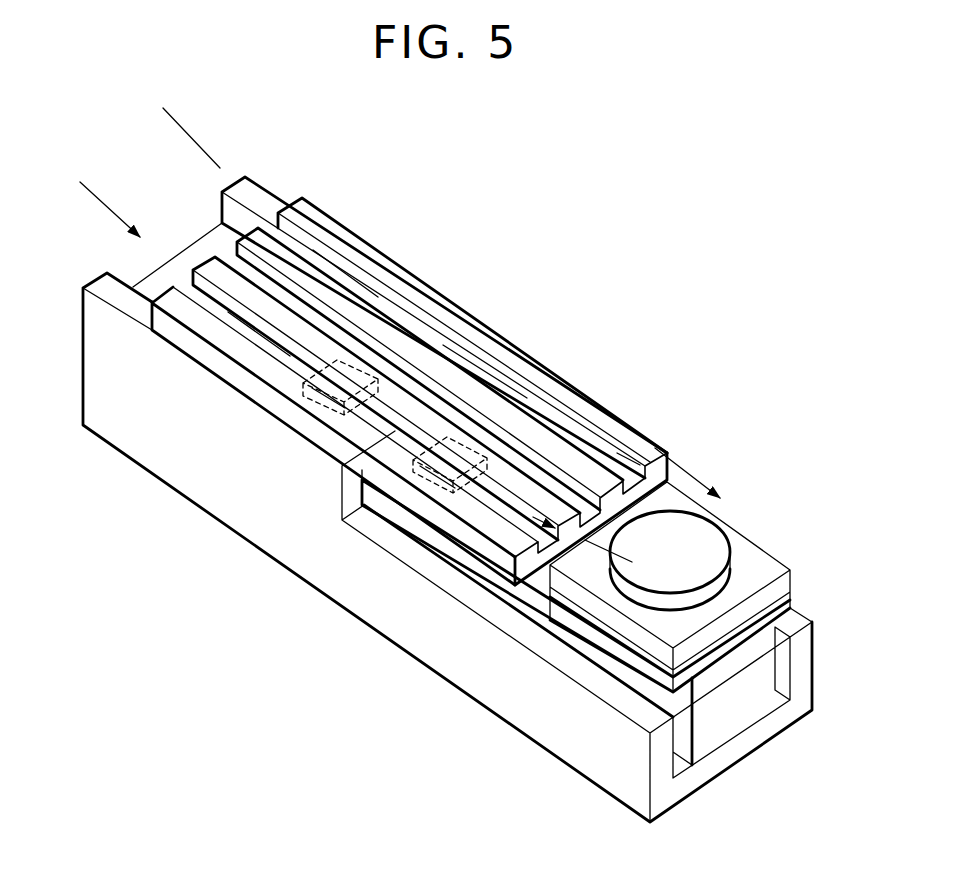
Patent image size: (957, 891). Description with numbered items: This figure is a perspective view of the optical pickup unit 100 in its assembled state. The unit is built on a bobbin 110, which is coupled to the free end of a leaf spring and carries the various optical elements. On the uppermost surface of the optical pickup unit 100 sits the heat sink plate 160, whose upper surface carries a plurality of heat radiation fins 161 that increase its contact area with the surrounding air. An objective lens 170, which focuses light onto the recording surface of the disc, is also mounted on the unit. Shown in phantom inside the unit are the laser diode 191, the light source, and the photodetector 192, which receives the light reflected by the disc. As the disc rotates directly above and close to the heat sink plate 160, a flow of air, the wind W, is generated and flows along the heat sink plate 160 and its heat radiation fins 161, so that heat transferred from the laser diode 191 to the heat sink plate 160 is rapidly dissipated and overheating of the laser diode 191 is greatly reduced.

The optical pickup unit 100 is at (733, 375).
The bobbin 110 is at (130, 432).
The heat sink plate 160 is at (450, 293).
The heat radiation fins 161 is at (208, 267).
The objective lens 170 is at (717, 543).
The laser diode 191 is at (432, 470).
The photodetector 192 is at (308, 392).
The wind W is at (680, 466).